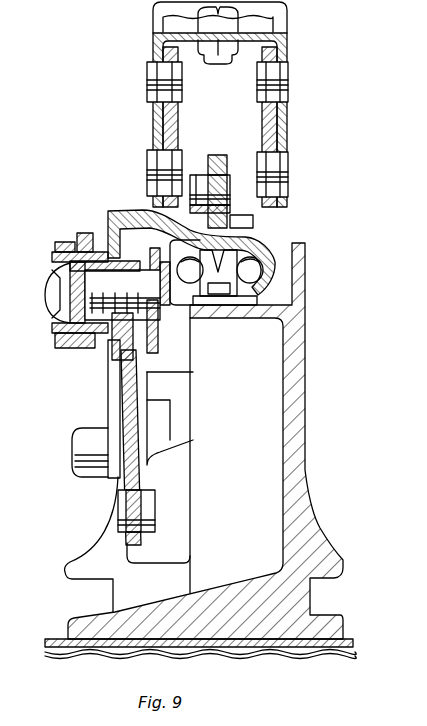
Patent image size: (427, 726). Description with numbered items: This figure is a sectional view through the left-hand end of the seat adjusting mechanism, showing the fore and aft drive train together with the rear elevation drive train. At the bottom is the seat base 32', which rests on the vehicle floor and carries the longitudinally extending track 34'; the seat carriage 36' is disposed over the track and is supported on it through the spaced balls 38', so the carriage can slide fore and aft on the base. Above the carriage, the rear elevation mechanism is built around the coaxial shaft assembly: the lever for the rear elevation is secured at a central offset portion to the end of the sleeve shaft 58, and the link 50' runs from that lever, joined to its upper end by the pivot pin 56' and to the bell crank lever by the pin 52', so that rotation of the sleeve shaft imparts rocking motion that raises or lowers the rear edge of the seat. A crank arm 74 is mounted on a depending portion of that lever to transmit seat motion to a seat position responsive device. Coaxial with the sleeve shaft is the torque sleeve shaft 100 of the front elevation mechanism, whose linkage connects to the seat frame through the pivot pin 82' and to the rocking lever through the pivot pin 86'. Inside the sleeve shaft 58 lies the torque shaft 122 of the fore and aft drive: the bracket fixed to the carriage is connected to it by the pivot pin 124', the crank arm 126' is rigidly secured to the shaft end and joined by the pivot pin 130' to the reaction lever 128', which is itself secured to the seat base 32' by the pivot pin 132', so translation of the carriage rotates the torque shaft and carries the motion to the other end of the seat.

The seat base 32' is at (200, 451).
The seat track 34' is at (220, 296).
The seat carriage 36' is at (209, 257).
The balls 38' is at (225, 319).
The link 50' is at (218, 173).
The pin 52' is at (91, 409).
The pivot pin 56' is at (224, 188).
The sleeve shaft 58 is at (50, 254).
The crank arm 74 is at (86, 440).
The pivot pin 82' is at (236, 104).
The pivot pin 86' is at (236, 173).
The torque sleeve shaft 100 is at (57, 242).
The torque shaft 122 is at (60, 277).
The pivot pin 124' is at (154, 330).
The crank arm 126' is at (104, 447).
The reaction lever 128' is at (172, 446).
The pivot pin 130' is at (158, 511).
The pivot pin 132' is at (188, 406).